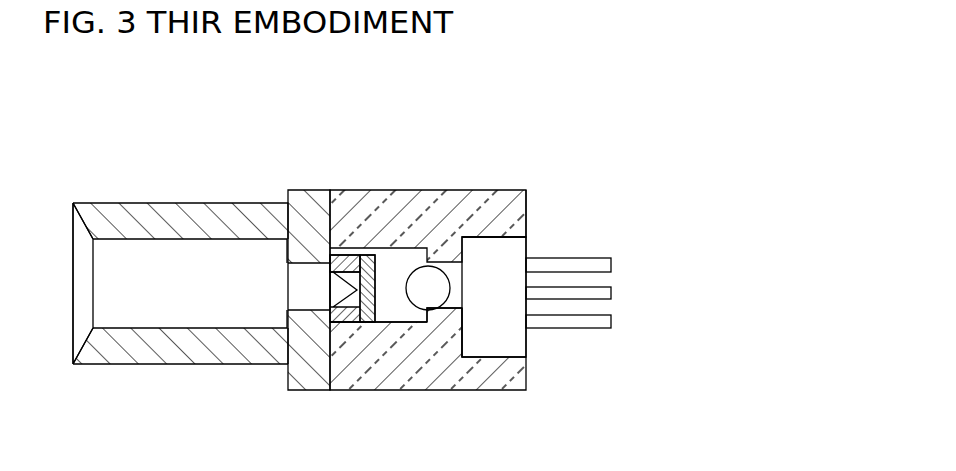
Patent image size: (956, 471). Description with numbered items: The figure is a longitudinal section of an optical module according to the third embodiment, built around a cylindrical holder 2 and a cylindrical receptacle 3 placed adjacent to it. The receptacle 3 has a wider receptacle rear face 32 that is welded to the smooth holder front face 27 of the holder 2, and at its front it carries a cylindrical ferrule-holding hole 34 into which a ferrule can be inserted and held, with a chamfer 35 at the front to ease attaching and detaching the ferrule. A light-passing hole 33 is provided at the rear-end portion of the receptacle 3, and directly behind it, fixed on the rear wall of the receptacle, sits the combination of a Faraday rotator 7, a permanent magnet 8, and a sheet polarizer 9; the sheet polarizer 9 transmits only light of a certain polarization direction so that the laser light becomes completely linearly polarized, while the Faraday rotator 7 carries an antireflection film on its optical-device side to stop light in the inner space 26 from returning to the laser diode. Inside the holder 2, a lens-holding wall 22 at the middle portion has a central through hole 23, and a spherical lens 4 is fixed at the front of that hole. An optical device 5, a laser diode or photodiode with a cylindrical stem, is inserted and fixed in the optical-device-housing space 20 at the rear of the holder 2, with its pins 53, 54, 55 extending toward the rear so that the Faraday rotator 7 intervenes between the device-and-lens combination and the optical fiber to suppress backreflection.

The holder 2 is at (467, 203).
The receptacle 3 is at (198, 343).
The spherical lens 4 is at (428, 298).
The optical device 5 is at (500, 328).
The Faraday rotator 7 is at (345, 325).
The permanent magnet 8 is at (366, 262).
The sheet polarizer 9 is at (396, 335).
The optical-device-housing space 20 is at (497, 232).
The lens-holding wall 22 is at (445, 313).
The through hole 23 is at (458, 305).
The inner space 26 is at (390, 260).
The holder front face 27 is at (350, 255).
The receptacle rear face 32 is at (325, 378).
The light-passing hole 33 is at (290, 268).
The ferrule-holding hole 34 is at (158, 252).
The chamfer 35 is at (79, 345).
The pin 53 is at (611, 265).
The pin 54 is at (611, 293).
The pin 55 is at (611, 322).